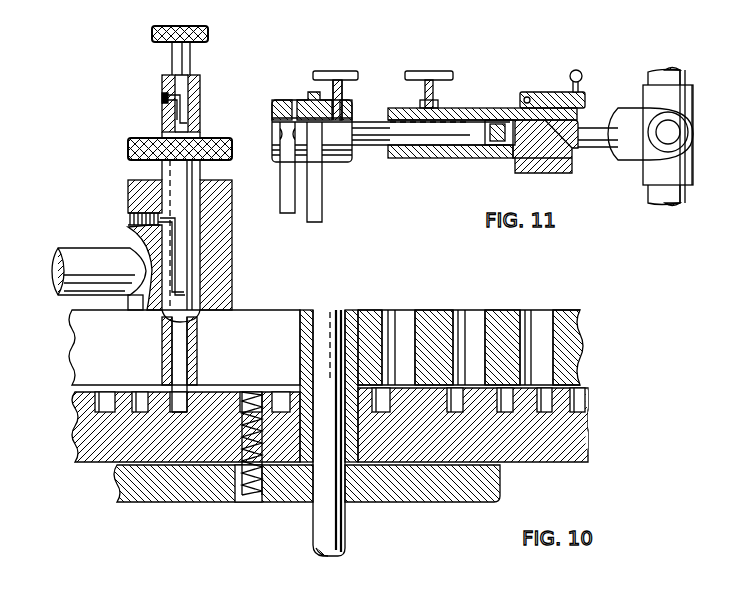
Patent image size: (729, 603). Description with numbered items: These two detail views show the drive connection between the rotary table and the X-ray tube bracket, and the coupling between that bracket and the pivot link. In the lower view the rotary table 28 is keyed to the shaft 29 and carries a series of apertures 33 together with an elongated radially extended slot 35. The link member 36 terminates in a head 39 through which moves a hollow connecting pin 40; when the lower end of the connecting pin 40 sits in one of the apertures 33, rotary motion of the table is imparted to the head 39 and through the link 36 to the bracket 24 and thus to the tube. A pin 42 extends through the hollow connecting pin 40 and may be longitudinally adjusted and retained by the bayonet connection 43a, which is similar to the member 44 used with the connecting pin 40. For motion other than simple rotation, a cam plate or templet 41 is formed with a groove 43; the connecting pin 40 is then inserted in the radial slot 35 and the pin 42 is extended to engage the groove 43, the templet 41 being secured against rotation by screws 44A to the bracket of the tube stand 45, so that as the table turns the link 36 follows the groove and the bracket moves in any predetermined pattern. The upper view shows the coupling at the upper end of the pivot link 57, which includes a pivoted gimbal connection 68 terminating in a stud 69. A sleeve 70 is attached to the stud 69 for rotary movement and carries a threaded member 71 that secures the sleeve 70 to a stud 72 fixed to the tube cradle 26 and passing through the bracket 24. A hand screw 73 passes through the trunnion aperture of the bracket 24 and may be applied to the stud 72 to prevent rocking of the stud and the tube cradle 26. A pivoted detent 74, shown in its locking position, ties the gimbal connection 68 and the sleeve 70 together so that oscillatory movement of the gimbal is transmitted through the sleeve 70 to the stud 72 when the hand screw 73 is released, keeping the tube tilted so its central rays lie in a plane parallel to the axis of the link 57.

In FIG. 11, the U-shaped bracket 24 is at (320, 196).
In FIG. 11, the tube cradle 26 is at (272, 150).
In FIG. 10, the rotary table 28 is at (470, 334).
In FIG. 10, the shaft 29 is at (323, 323).
In FIG. 10, the apertures 33 is at (403, 315).
In FIG. 10, the radially extended slot 35 is at (255, 323).
In FIG. 10, the link member 36 is at (97, 258).
In FIG. 10, the head 39 is at (232, 268).
In FIG. 10, the connecting pin 40 is at (199, 241).
In FIG. 10, the cam plate 41 is at (346, 417).
In FIG. 10, the pin 42 is at (185, 70).
In FIG. 10, the groove 43 is at (582, 402).
In FIG. 10, the bayonet connection 43a is at (162, 102).
In FIG. 10, the member 44 is at (128, 222).
In FIG. 10, the screws 44A is at (242, 478).
In FIG. 10, the bracket of the tube stand 45 is at (455, 503).
In FIG. 11, the pivot link 57 is at (683, 82).
In FIG. 11, the gimbal connection 68 is at (676, 134).
In FIG. 11, the stud 69 is at (512, 158).
In FIG. 11, the sleeve 70 is at (492, 110).
In FIG. 11, the threaded member 71 is at (413, 71).
In FIG. 11, the stud 72 is at (370, 137).
In FIG. 11, the hand screw 73 is at (328, 71).
In FIG. 11, the pivoted detent 74 is at (550, 92).